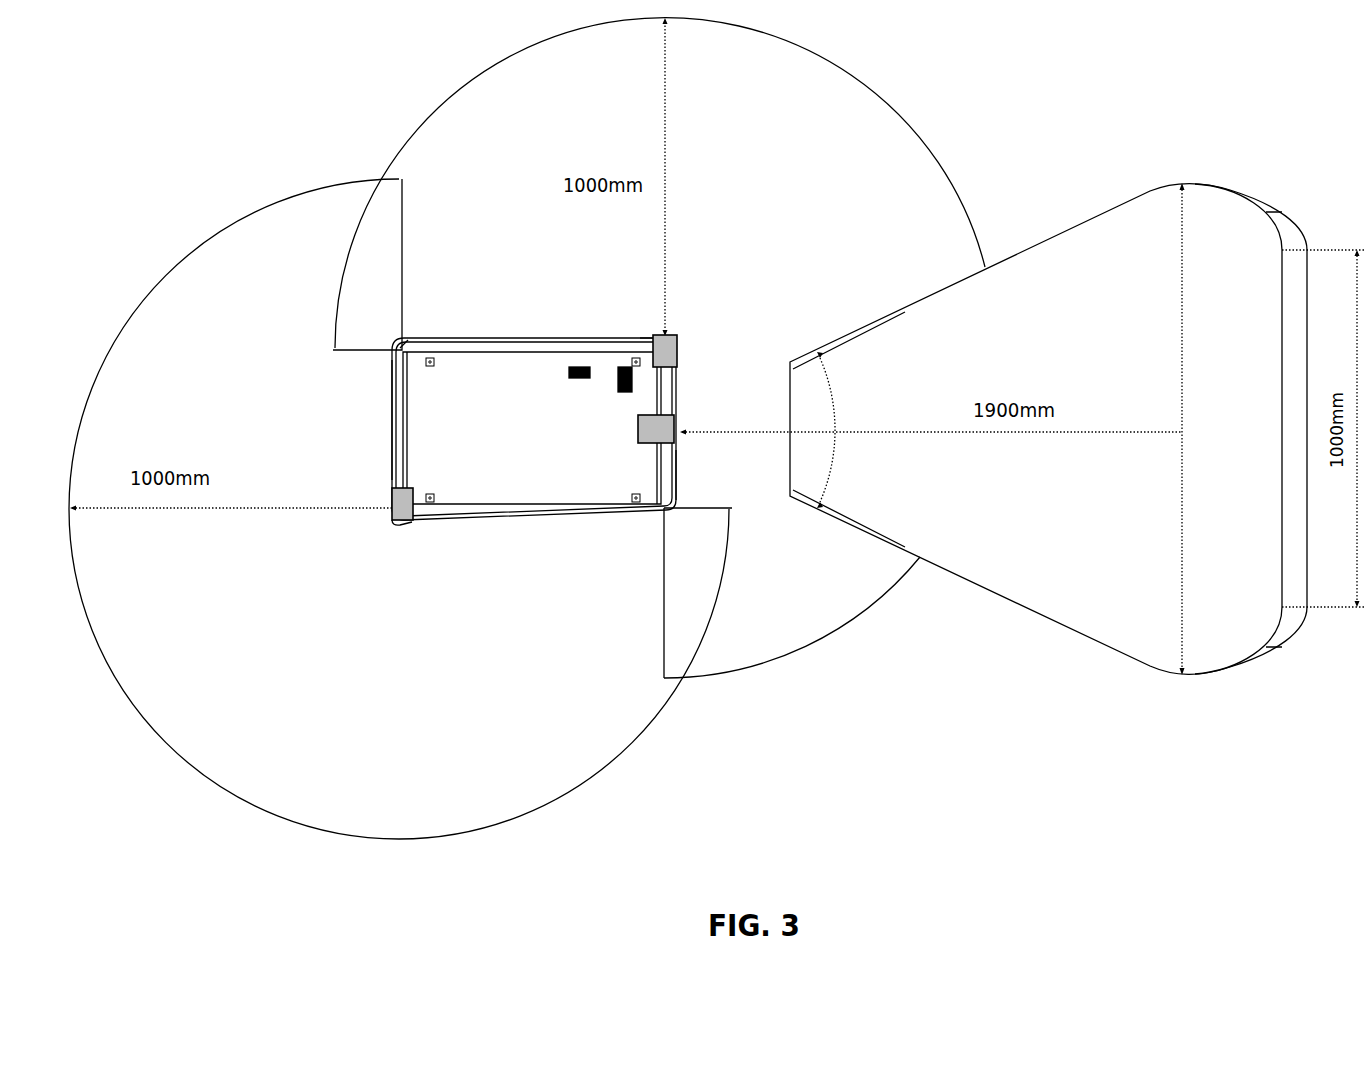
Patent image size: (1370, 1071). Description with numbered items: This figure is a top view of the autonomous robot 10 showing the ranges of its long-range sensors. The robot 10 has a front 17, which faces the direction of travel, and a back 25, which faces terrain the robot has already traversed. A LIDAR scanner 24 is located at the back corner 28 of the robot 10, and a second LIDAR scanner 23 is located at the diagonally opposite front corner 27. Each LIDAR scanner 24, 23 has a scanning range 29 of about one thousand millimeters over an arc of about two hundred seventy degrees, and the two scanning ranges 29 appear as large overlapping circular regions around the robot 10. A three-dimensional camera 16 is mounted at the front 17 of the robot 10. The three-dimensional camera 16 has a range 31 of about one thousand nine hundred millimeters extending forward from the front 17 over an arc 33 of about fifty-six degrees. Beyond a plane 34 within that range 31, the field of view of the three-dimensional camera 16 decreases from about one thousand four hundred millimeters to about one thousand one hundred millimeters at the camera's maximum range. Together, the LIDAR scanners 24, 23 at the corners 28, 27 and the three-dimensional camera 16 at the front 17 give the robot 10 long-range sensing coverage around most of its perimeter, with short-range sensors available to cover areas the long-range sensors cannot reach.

The autonomous robot 10 is at (534, 429).
The 3D camera 16 is at (660, 426).
The front 17 is at (680, 470).
The LIDAR scanner 23 is at (655, 340).
The LIDAR scanner 24 is at (403, 500).
The back 25 is at (383, 397).
The front corner 27 is at (680, 340).
The back corner 28 is at (402, 523).
The scanning range 29 is at (880, 143).
The range 31 is at (1048, 245).
The arc 33 is at (836, 470).
The plane 34 is at (1180, 318).